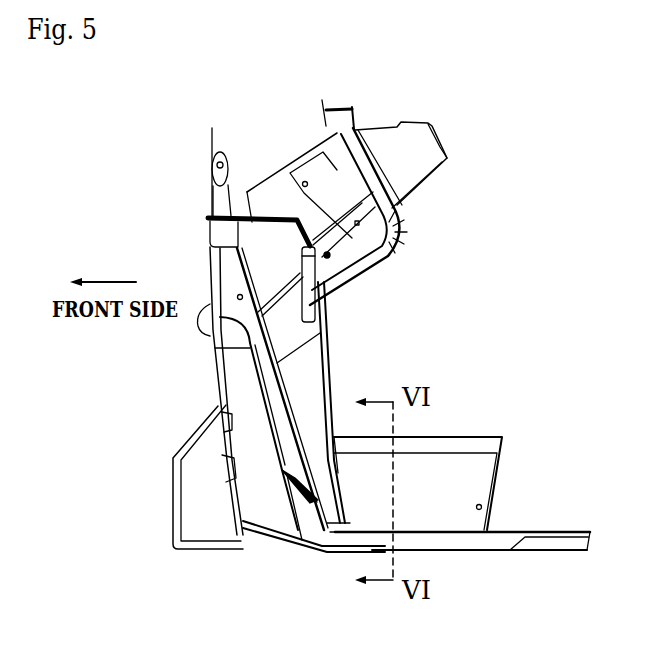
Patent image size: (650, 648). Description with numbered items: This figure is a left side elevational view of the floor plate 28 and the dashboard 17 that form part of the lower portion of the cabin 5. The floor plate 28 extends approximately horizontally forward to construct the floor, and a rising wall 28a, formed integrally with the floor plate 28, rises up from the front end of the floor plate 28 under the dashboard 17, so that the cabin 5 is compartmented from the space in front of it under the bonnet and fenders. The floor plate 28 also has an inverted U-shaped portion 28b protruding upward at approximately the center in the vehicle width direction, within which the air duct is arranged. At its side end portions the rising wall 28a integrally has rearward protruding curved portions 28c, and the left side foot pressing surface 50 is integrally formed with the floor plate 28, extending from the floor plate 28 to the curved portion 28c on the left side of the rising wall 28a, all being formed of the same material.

The cabin 5 is at (530, 190).
The dashboard 17 is at (395, 211).
The floor plate 28 is at (473, 543).
The rising wall 28a is at (229, 411).
The inverted U-shaped portion 28b is at (476, 436).
The curved portion 28c is at (268, 495).
The left side foot pressing surface 50 is at (360, 535).